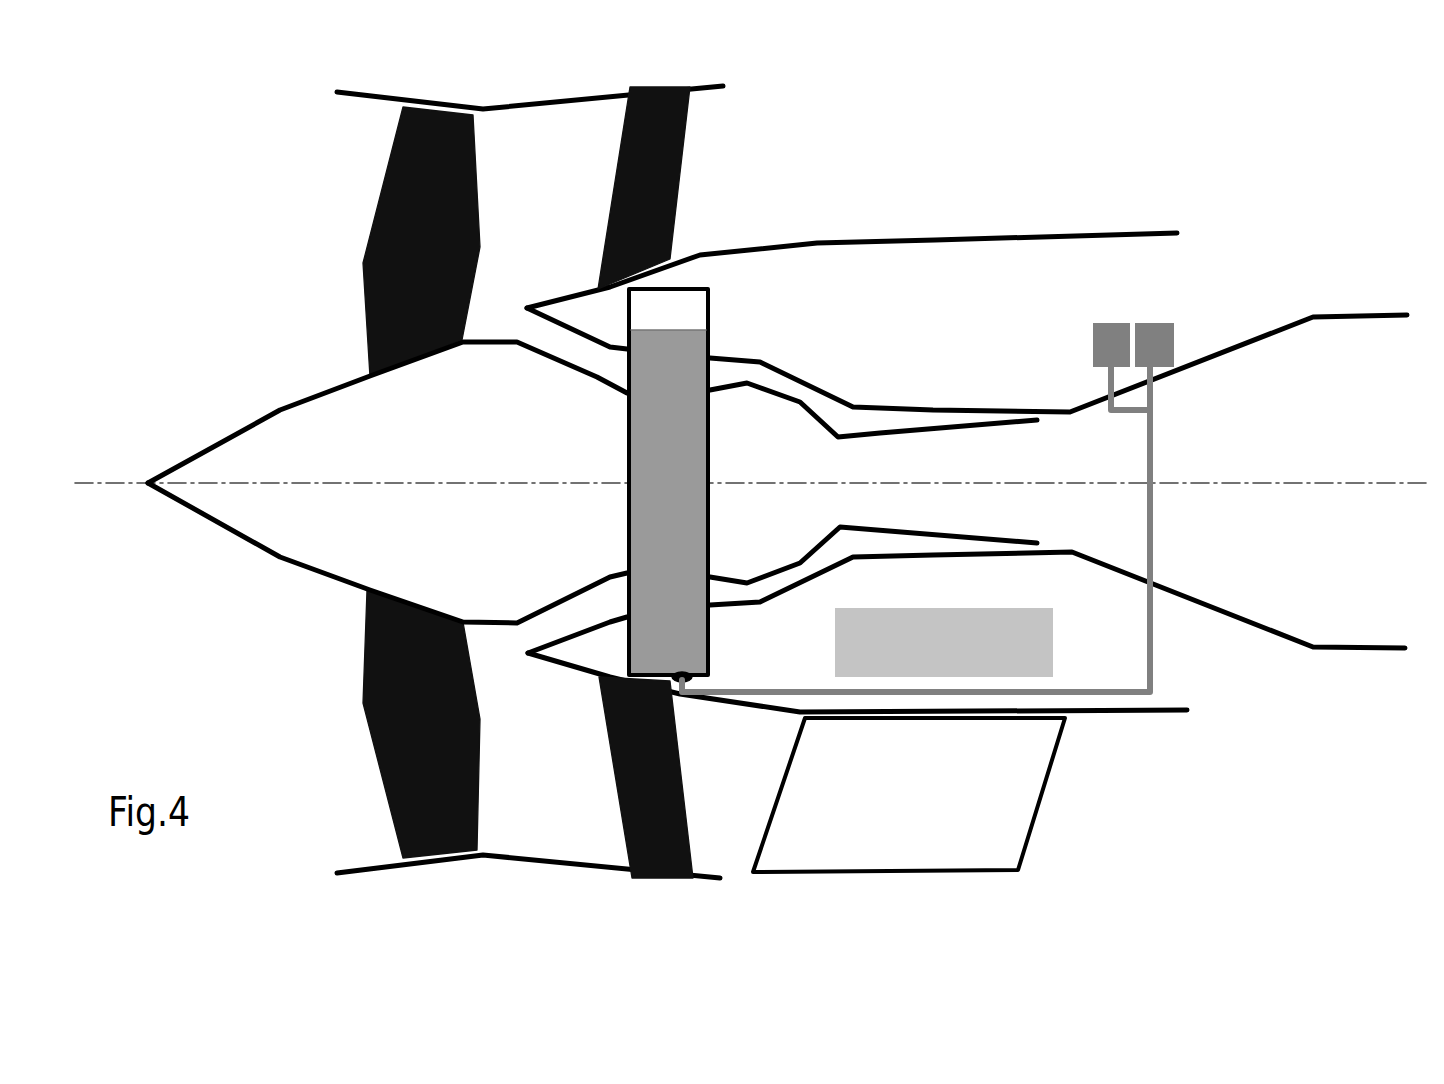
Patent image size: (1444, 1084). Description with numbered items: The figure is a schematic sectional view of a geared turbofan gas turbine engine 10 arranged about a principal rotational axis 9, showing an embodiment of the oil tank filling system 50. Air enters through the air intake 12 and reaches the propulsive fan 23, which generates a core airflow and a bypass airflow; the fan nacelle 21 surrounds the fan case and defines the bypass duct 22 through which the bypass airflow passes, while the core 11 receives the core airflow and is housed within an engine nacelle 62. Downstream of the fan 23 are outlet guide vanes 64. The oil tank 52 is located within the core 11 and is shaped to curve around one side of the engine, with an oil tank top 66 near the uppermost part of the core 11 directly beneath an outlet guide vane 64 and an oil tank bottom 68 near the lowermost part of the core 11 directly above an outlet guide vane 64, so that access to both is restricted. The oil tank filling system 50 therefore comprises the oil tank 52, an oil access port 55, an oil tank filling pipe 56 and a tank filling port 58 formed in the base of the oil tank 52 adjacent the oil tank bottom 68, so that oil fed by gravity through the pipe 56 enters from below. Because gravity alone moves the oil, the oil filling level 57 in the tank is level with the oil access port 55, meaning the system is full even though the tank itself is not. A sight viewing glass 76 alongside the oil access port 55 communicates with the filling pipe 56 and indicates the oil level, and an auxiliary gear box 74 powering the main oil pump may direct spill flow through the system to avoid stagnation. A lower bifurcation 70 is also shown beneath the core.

The principal rotational axis 9 is at (1258, 483).
The gas turbine engine 10 is at (1152, 148).
The core 11 is at (895, 324).
The air intake 12 is at (328, 299).
The fan nacelle 21 is at (367, 96).
The bypass duct 22 is at (548, 197).
The fan 23 is at (377, 212).
The oil tank filling system 50 is at (1208, 409).
The oil tank 52 is at (627, 436).
The oil access port 55 is at (1152, 323).
The oil tank filling pipe 56 is at (1153, 645).
The oil filling level 57 is at (710, 323).
The tank filling port 58 is at (674, 680).
The engine nacelle 62 is at (972, 235).
The outlet guide vane 64 is at (685, 138).
The oil tank top 66 is at (662, 283).
The oil tank bottom 68 is at (622, 668).
The lower bifurcation 70 is at (1032, 828).
The auxiliary gear box 74 is at (902, 660).
The sight viewing glass 76 is at (1110, 323).